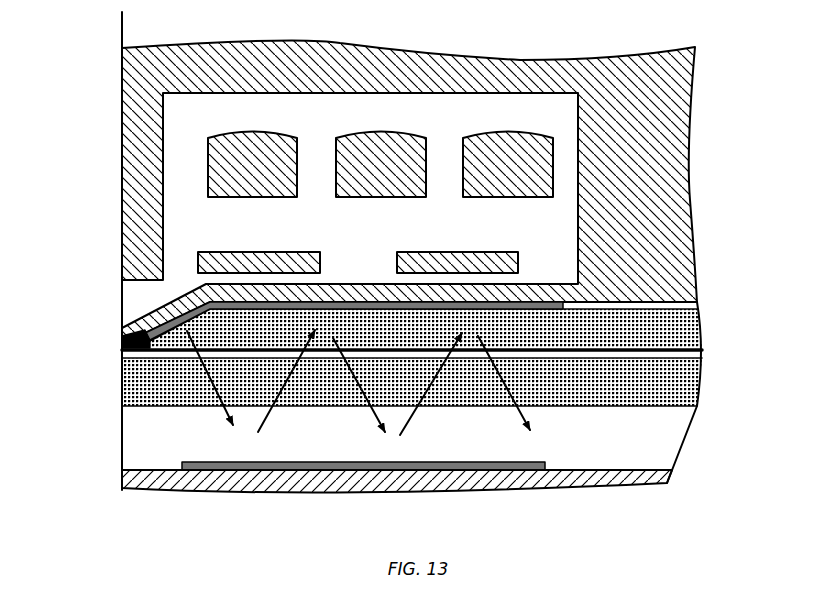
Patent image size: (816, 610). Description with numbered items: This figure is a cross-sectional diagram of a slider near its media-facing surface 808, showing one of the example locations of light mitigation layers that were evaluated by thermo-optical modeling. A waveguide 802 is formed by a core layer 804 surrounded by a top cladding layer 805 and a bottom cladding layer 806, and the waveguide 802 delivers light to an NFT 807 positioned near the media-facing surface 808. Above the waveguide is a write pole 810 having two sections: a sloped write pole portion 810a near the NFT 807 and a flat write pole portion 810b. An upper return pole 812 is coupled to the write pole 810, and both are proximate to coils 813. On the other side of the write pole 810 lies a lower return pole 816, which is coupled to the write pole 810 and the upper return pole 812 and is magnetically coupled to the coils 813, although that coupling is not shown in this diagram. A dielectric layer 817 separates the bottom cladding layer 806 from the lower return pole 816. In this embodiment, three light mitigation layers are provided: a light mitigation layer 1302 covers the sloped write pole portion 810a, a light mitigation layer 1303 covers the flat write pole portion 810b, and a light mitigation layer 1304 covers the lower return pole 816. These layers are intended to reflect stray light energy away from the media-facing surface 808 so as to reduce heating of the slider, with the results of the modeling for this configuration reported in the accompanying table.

The waveguide 802 is at (723, 300).
The core layer 804 is at (592, 350).
The top cladding layer 805 is at (698, 308).
The bottom cladding layer 806 is at (527, 378).
The NFT 807 is at (123, 343).
The media-facing surface 808 is at (122, 28).
The write pole 810 is at (387, 285).
The sloped write pole portion 810a is at (122, 331).
The flat write pole portion 810b is at (327, 287).
The upper return pole 812 is at (122, 213).
The coils 813 is at (268, 220).
The lower return pole 816 is at (418, 475).
The dielectric layer 817 is at (138, 445).
The light mitigation layer 1302 is at (143, 351).
The light mitigation layer 1303 is at (340, 310).
The light mitigation layer 1304 is at (340, 481).